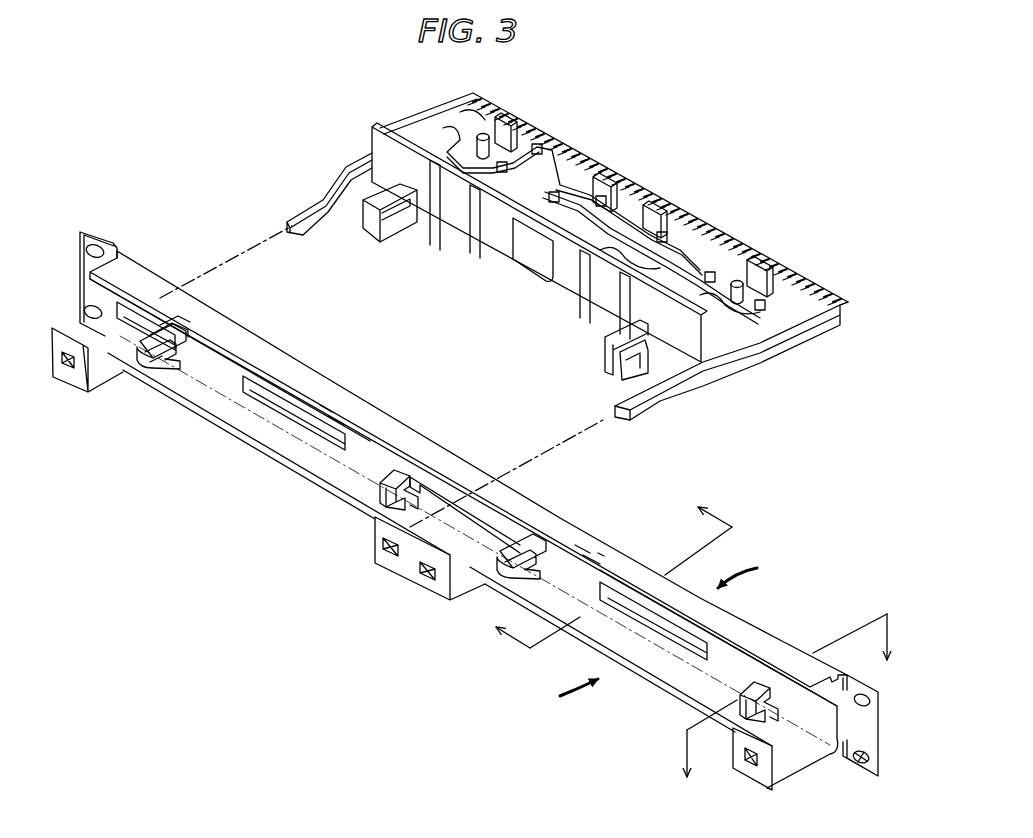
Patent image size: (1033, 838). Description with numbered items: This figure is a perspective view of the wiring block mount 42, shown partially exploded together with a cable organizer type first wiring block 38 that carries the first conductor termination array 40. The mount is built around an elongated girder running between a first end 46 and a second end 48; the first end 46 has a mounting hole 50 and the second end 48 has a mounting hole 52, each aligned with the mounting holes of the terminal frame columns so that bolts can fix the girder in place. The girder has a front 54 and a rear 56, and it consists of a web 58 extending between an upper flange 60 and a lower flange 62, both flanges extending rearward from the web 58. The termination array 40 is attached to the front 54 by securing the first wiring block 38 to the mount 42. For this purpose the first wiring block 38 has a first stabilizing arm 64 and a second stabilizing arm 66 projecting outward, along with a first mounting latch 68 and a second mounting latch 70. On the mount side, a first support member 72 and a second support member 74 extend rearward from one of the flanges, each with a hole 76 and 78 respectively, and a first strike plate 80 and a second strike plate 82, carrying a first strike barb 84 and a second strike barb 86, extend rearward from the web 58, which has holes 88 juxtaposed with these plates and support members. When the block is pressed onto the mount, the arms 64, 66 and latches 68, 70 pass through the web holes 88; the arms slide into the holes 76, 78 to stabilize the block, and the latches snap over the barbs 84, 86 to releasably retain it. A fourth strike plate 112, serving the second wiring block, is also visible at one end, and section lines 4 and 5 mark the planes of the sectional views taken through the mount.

The first wiring block 38 is at (757, 364).
The first conductor termination array 40 is at (677, 198).
The wiring block mount 42 is at (232, 442).
The girder first end 46 is at (92, 228).
The girder second end 48 is at (392, 547).
The mounting hole 50 is at (97, 245).
The mounting hole 52 is at (862, 762).
The front 54 is at (751, 568).
The rear 56 is at (563, 693).
The web 58 is at (368, 463).
The upper flange 60 is at (747, 638).
The lower flange 62 is at (687, 677).
The first stabilizing arm 64 is at (297, 213).
The second stabilizing arm 66 is at (650, 408).
The first mounting latch 68 is at (367, 224).
The second mounting latch 70 is at (630, 376).
The first support member 72 is at (82, 393).
The second support member 74 is at (375, 550).
The hole 76 is at (70, 372).
The hole 78 is at (750, 764).
The first strike plate 80 is at (142, 368).
The second strike plate 82 is at (390, 475).
The first strike barb 84 is at (168, 370).
The second strike barb 86 is at (420, 456).
The holes 88 is at (170, 322).
The fourth strike plate 112 is at (762, 683).
The section line 4- 4 is at (605, 569).
The section line 5- 5 is at (787, 712).